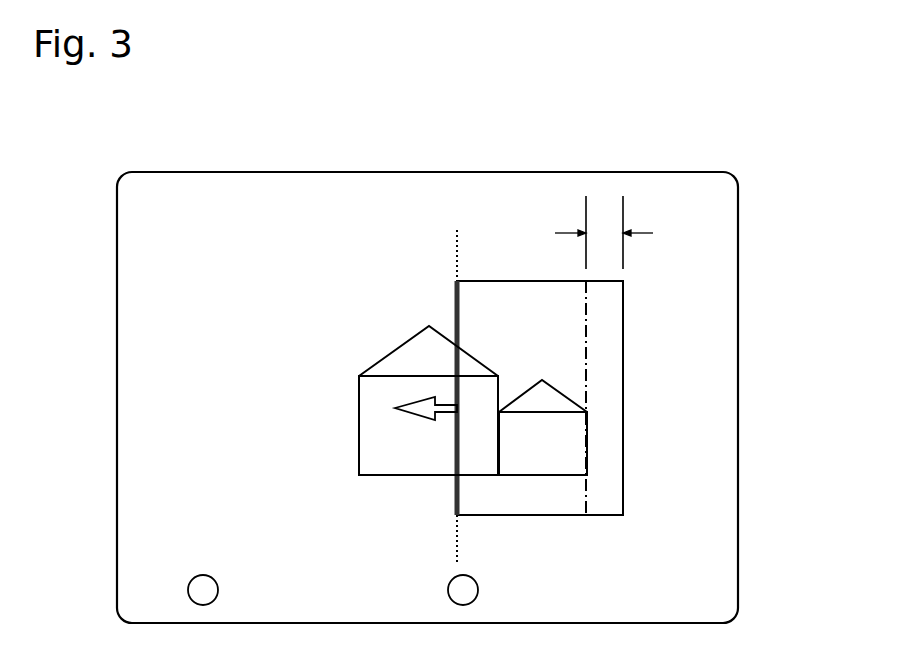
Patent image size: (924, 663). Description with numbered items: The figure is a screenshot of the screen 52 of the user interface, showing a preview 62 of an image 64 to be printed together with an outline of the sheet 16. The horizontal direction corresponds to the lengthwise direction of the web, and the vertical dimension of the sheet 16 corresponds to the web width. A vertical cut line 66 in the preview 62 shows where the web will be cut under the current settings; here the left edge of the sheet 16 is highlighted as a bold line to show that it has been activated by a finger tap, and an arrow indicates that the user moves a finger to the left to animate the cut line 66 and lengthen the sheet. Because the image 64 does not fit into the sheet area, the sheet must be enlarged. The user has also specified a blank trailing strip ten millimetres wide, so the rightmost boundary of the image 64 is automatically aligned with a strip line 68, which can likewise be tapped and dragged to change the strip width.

The sheet 16 is at (623, 445).
The screen 52 is at (394, 197).
The preview 62 is at (519, 194).
The image 64 is at (359, 417).
The cut line 66 is at (457, 257).
The strip line 68 is at (586, 312).